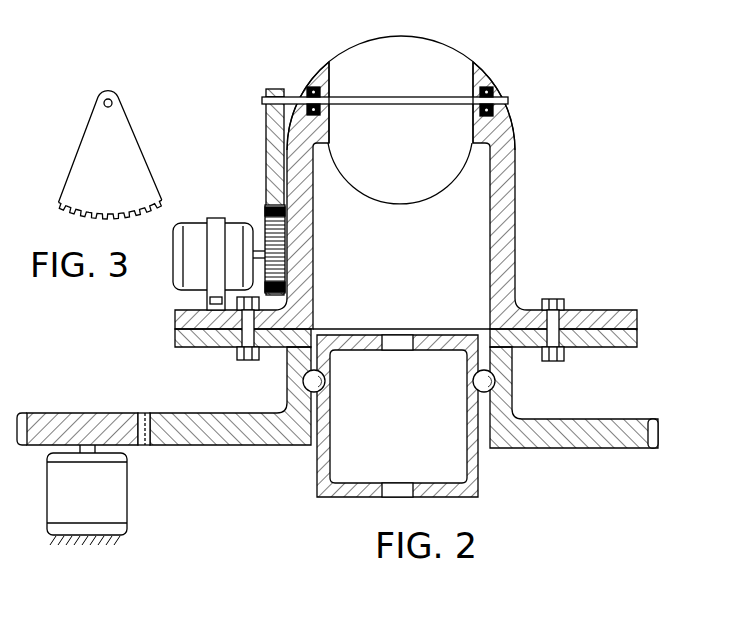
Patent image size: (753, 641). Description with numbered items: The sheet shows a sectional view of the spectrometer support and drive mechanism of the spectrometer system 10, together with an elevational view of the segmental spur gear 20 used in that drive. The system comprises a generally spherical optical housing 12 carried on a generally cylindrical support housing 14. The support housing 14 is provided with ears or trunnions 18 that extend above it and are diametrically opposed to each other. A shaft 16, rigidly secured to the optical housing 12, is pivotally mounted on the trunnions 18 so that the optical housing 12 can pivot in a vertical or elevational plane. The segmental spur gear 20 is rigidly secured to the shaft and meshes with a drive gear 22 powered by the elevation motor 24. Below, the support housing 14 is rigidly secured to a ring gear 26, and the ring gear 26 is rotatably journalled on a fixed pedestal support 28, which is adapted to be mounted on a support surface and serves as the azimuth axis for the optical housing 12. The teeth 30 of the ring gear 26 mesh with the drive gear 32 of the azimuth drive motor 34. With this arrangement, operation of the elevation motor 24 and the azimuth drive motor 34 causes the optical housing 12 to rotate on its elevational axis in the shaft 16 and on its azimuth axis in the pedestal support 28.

In FIG. 2, the spectrometer system 10 is at (406, 169).
In FIG. 2, the optical housing 12 is at (458, 41).
In FIG. 2, the support housing 14 is at (517, 152).
In FIG. 2, the shaft 16 is at (457, 102).
In FIG. 2, the trunnions 18 is at (319, 64).
In FIG. 2, the segmental spur gear 20 is at (270, 89).
In FIG. 3, the segmental spur gear 20 is at (143, 142).
In FIG. 2, the drive gear 22 is at (265, 222).
In FIG. 2, the elevation motor 24 is at (180, 268).
In FIG. 2, the ring gear 26 is at (176, 347).
In FIG. 2, the pedestal support 28 is at (479, 491).
In FIG. 2, the teeth 30 is at (157, 412).
In FIG. 2, the drive gear 32 is at (44, 420).
In FIG. 2, the azimuth drive motor 34 is at (52, 480).